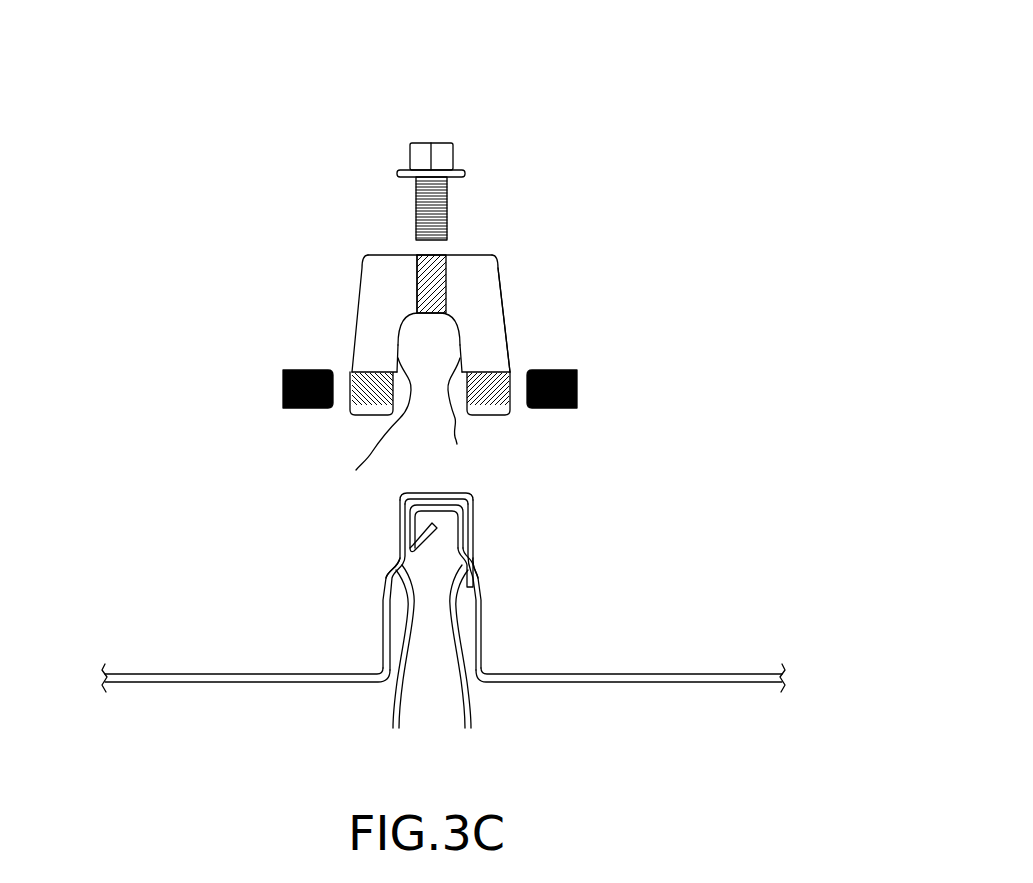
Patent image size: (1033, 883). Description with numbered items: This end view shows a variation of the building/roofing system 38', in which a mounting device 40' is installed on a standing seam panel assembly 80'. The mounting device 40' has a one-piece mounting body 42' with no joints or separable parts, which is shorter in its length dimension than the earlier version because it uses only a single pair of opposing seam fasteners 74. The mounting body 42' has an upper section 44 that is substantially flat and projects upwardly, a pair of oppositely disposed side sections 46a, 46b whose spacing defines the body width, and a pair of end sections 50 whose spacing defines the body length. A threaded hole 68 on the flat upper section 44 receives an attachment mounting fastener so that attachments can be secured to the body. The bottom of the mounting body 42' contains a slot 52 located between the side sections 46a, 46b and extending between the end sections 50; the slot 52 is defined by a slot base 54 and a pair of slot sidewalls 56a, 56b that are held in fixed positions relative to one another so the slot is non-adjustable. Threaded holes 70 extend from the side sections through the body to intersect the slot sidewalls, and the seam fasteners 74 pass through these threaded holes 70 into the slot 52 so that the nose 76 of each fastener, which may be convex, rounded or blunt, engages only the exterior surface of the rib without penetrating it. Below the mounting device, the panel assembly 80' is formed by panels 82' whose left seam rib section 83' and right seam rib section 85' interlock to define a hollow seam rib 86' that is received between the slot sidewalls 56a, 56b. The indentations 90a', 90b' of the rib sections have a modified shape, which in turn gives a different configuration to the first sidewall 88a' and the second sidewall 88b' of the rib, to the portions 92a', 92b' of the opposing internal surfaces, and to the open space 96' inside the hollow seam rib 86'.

The roofing system 38' is at (771, 61).
The mounting device 40' is at (561, 99).
The mounting body 42' is at (525, 276).
The upper section 44 is at (383, 254).
The side section 46a is at (358, 283).
The side section 46b is at (501, 284).
The end section 50 is at (483, 288).
The slot 52 is at (428, 409).
The slot base 54 is at (428, 314).
The first slot sidewall 56a is at (376, 430).
The second slot sidewall 56b is at (458, 416).
The threaded hole 68 is at (417, 278).
The threaded hole 70 is at (370, 372).
The seam fastener 74 is at (303, 370).
The nose 76 is at (337, 404).
The panel assembly 80' is at (710, 581).
The panel 82' is at (443, 638).
The left seam rib section 83' is at (515, 579).
The right seam rib section 85' is at (373, 559).
The hollow seam rib 86' is at (468, 482).
The first sidewall 88a' is at (335, 585).
The second sidewall 88b' is at (545, 585).
The indentation 90a' is at (330, 542).
The indentation 90b' is at (545, 537).
The portion of internal surface 92a' is at (399, 662).
The portion of internal surface 92b' is at (470, 669).
The open space 96' is at (433, 680).